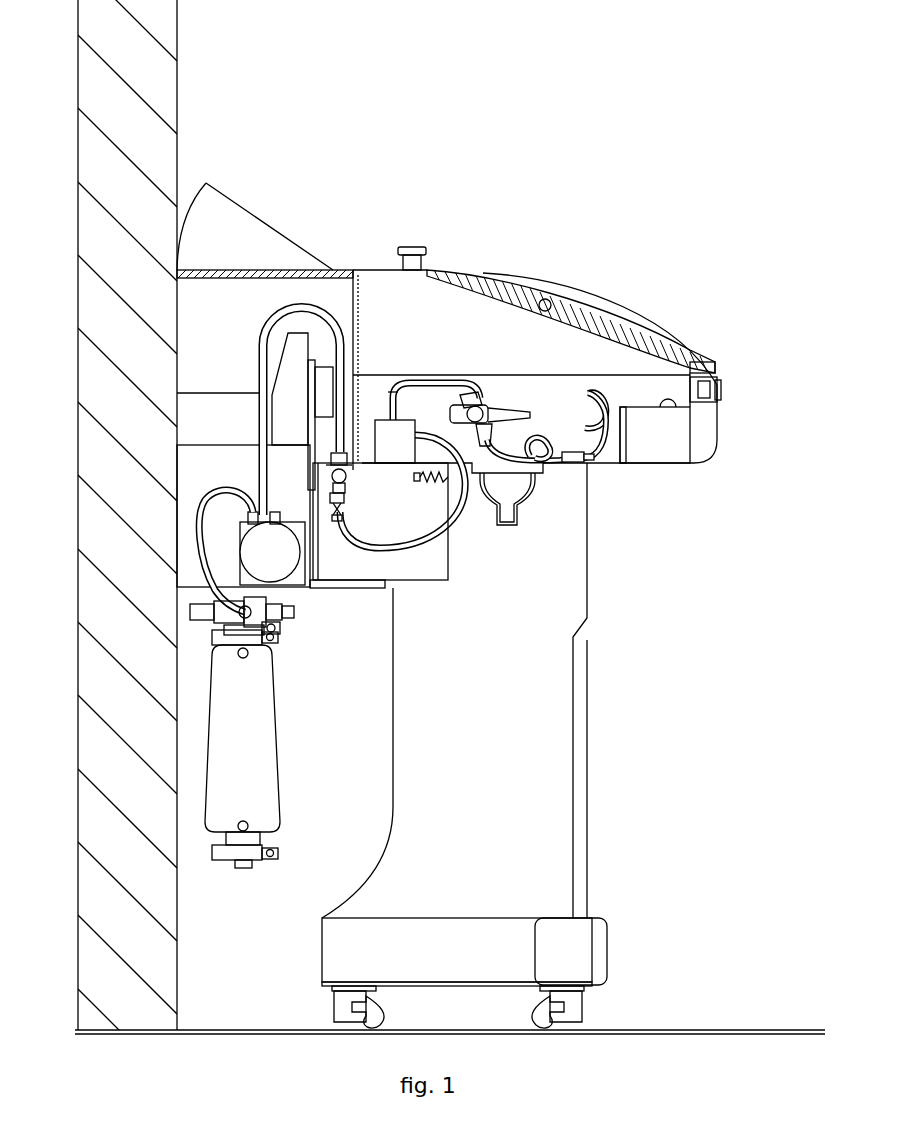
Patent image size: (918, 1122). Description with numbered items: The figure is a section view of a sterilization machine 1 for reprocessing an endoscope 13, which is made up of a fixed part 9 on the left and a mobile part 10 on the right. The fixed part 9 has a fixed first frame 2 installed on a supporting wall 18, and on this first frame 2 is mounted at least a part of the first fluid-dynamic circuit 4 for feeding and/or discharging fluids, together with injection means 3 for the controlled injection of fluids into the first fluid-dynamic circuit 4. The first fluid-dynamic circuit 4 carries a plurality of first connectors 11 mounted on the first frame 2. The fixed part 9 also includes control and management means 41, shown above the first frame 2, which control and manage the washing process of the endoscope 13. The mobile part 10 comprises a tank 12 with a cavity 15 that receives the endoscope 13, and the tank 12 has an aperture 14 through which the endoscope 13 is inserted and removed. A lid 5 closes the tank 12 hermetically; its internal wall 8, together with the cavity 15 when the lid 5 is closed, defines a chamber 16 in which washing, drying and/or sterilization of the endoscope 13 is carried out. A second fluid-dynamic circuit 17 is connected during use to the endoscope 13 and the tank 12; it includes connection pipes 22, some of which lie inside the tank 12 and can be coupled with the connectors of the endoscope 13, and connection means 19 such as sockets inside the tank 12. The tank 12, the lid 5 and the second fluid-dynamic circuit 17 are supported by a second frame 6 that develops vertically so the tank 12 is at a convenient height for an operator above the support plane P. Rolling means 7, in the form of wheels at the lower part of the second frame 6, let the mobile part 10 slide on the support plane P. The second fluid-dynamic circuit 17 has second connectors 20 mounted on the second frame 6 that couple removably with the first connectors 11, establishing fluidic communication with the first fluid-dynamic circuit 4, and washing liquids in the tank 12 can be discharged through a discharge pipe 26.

The sterilization machine 1 is at (409, 68).
The first frame 2 is at (172, 273).
The injection means 3 is at (287, 795).
The first fluid-dynamic circuit 4 is at (226, 426).
The lid 5 is at (609, 303).
The second frame 6 is at (592, 591).
The rolling means 7 is at (324, 1004).
The wall 8 is at (546, 300).
The fixed part 9 is at (277, 168).
The mobile part 10 is at (503, 142).
The first connectors 11 is at (332, 478).
The tank 12 is at (616, 385).
The endoscope 13 is at (596, 425).
The aperture 14 is at (703, 356).
The cavity 15 is at (670, 410).
The chamber 16 is at (603, 356).
The second fluid-dynamic circuit 17 is at (393, 387).
The supporting wall 18 is at (148, 75).
The connection means 19 is at (390, 452).
The second connectors 20 is at (336, 506).
The connection pipes 22 is at (471, 389).
The discharge pipe 26 is at (520, 512).
The control and management means 41 is at (278, 216).
The support plane P is at (688, 1033).